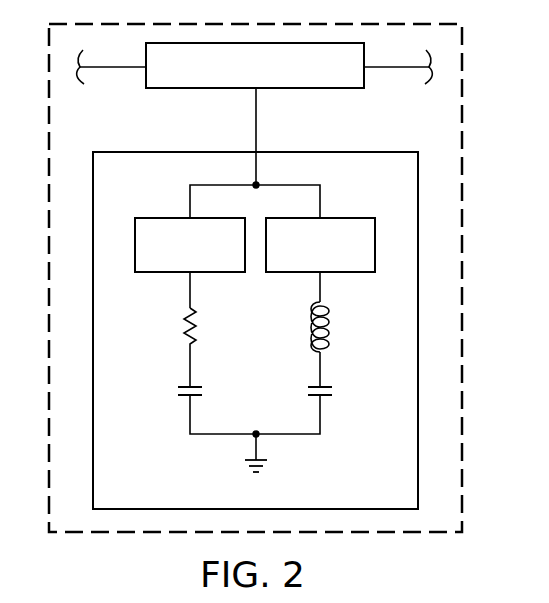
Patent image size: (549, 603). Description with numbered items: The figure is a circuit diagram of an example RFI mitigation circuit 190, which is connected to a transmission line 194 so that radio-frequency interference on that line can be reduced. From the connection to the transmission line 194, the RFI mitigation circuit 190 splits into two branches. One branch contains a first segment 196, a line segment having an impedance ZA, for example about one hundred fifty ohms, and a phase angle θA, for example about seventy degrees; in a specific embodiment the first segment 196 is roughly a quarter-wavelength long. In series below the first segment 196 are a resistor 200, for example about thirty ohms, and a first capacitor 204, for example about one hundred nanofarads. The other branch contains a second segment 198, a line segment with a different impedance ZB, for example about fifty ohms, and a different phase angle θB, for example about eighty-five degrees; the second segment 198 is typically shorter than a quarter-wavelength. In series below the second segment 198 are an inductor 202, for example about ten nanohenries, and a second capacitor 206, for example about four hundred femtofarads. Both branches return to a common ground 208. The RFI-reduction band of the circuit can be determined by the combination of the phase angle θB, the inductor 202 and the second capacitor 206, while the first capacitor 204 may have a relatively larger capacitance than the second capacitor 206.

The RFI mitigation circuit 190 is at (369, 148).
The transmission line 194 is at (213, 90).
The first segment 196 is at (168, 218).
The second segment 198 is at (343, 218).
The resistor 200 is at (185, 322).
The inductor 202 is at (328, 330).
The first capacitor 204 is at (178, 390).
The second capacitor 206 is at (333, 392).
The ground 208 is at (245, 468).